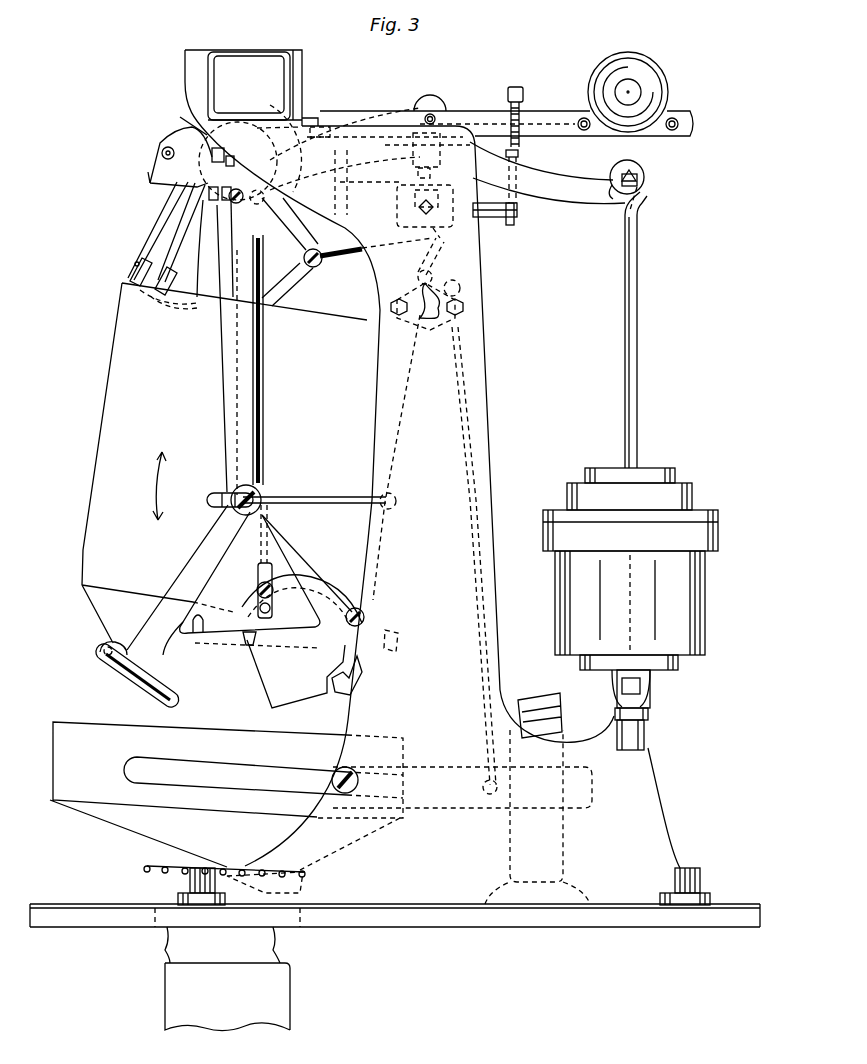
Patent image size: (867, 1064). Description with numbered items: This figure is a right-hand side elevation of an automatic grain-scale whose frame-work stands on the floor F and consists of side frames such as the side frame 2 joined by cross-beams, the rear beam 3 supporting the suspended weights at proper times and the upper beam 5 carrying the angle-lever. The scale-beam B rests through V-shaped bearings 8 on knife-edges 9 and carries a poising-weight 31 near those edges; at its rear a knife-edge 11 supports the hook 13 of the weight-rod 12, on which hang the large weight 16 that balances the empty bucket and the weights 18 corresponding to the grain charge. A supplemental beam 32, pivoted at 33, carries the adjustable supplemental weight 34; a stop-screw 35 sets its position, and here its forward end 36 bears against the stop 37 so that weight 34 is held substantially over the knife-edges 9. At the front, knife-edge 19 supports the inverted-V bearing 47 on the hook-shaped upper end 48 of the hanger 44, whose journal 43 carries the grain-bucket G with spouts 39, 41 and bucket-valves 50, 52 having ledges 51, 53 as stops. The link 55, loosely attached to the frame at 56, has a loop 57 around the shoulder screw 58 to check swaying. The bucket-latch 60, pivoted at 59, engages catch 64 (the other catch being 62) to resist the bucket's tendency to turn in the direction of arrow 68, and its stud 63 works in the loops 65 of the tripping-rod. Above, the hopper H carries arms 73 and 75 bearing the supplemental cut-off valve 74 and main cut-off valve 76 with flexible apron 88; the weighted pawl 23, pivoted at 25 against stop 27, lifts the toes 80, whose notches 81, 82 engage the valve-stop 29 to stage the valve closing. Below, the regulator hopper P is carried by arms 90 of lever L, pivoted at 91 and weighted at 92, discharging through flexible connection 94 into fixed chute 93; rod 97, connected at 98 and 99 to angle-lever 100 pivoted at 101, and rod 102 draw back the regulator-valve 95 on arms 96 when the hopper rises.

The side frame 2 is at (476, 403).
The cross-beam 3 is at (652, 683).
The cross-beam 5 is at (428, 322).
The V-shaped bearing 8 is at (432, 175).
The knife-edge 9 is at (442, 182).
The knife-edge 11 is at (634, 178).
The weight-rod 12 is at (628, 398).
The hook 13 is at (620, 170).
The large weight 16 is at (690, 605).
The weights 18 is at (668, 471).
The knife-edge 19 is at (236, 162).
The weighted pawl 23 is at (177, 138).
The pawl pivot 25 is at (162, 153).
The stop 27 is at (152, 183).
The valve-stop 29 is at (236, 203).
The poising-weight 31 is at (403, 220).
The supplemental beam 32 is at (448, 118).
The pivot 33 is at (429, 113).
The supplemental weight 34 is at (600, 88).
The stop-screw 35 is at (520, 137).
The forward end 36 is at (324, 127).
The stop 37 is at (308, 119).
The spout 39 is at (163, 668).
The spout 41 is at (288, 693).
The journal 43 is at (237, 486).
The hanger 44 is at (233, 407).
The inverted-V-shaped bearing 47 is at (224, 147).
The hook-shaped upper end 48 is at (238, 140).
The bucket-valve 50 is at (128, 678).
The ledge 51 is at (104, 653).
The bucket-valve 52 is at (352, 690).
The ledge 53 is at (398, 636).
The link 55 is at (301, 498).
The frame connection 56 is at (397, 500).
The loop 57 is at (214, 508).
The shoulder screw 58 is at (254, 497).
The latch pivot 59 is at (364, 617).
The bucket-latch 60 is at (327, 587).
The bucket-catch 62 is at (201, 633).
The stud 63 is at (260, 583).
The bucket-catch 64 is at (250, 634).
The loops 65 is at (273, 606).
The arrow 68 is at (159, 472).
The arms 73 is at (160, 218).
The supplemental cut-off valve 74 is at (143, 288).
The arms 75 is at (172, 237).
The main cut-off valve 76 is at (183, 296).
The toes 80 is at (208, 135).
The notch 81 is at (226, 200).
The notch 82 is at (212, 200).
The flexible apron 88 is at (193, 308).
The arms 90 is at (190, 767).
The lever pivot 91 is at (352, 793).
The regulator-weight 92 is at (530, 700).
The fixed chute 93 is at (277, 979).
The flexible connection 94 is at (263, 941).
The regulator-valve 95 is at (293, 281).
The arms 96 is at (296, 241).
The rod 97 is at (476, 551).
The rod connection 98 is at (491, 795).
The rod connection 99 is at (459, 290).
The angle-lever 100 is at (440, 259).
The angle-lever pivot 101 is at (418, 277).
The rod 102 is at (350, 255).
The discharging hopper H is at (237, 70).
The scale-beam B is at (537, 183).
The grain-bucket G is at (224, 447).
The regulator hopper P is at (112, 817).
The regulator lever L is at (436, 785).
The floor F is at (400, 913).